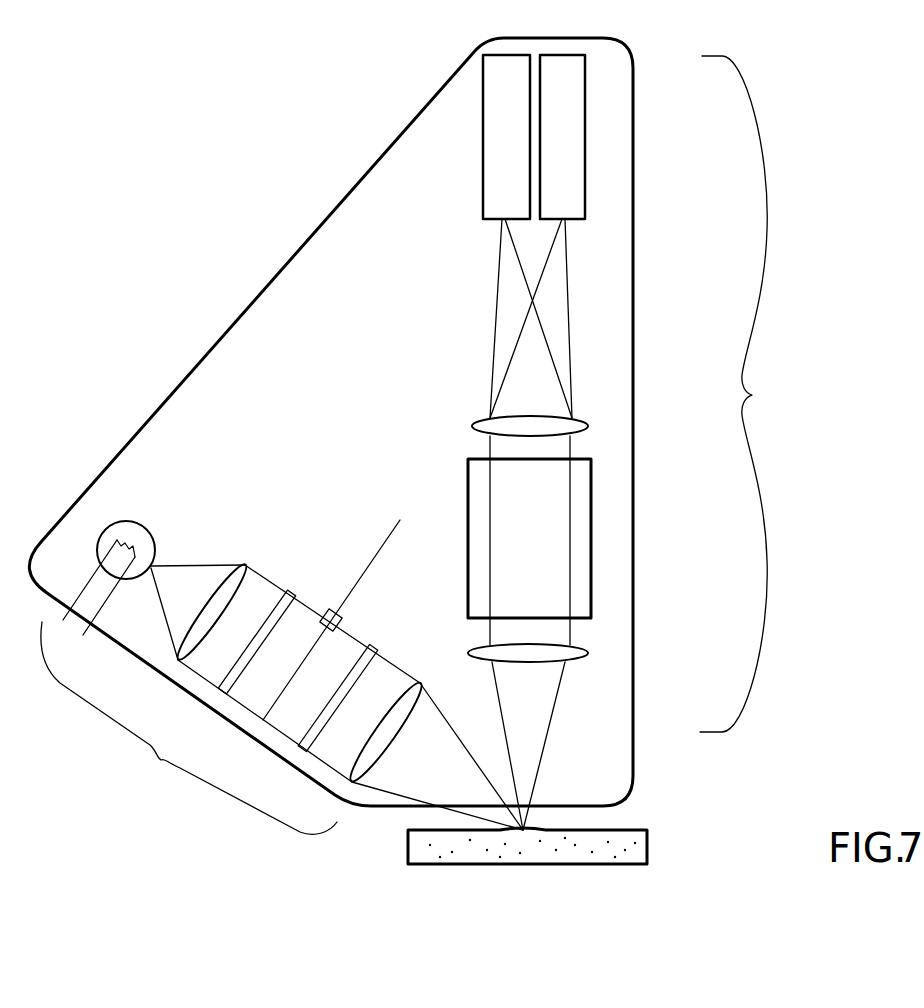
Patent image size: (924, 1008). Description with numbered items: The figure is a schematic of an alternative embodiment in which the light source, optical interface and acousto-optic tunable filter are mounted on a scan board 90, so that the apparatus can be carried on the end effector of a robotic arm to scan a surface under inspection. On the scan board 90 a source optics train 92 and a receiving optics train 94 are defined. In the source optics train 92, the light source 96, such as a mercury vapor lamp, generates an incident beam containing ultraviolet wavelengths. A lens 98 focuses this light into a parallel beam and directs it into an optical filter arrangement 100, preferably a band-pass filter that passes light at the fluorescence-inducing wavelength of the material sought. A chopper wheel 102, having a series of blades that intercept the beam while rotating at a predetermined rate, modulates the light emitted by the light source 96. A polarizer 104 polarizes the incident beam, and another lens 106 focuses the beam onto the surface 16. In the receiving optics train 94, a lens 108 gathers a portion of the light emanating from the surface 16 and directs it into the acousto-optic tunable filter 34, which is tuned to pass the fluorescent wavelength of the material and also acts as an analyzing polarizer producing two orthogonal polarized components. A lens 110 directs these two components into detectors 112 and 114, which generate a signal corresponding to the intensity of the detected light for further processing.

The surface 16 is at (640, 852).
The acousto-optic tunable filter 34 is at (580, 530).
The scan board 90 is at (346, 388).
The source optics train 92 is at (189, 728).
The receiving optics train 94 is at (749, 394).
The light source 96 is at (145, 538).
The lens 98 is at (243, 565).
The optical filter arrangement 100 is at (290, 593).
The chopper wheel 102 is at (393, 527).
The polarizer 104 is at (373, 647).
The lens 106 is at (420, 685).
The lens 108 is at (585, 661).
The lens 110 is at (577, 417).
The detector 112 is at (497, 190).
The detector 114 is at (570, 171).